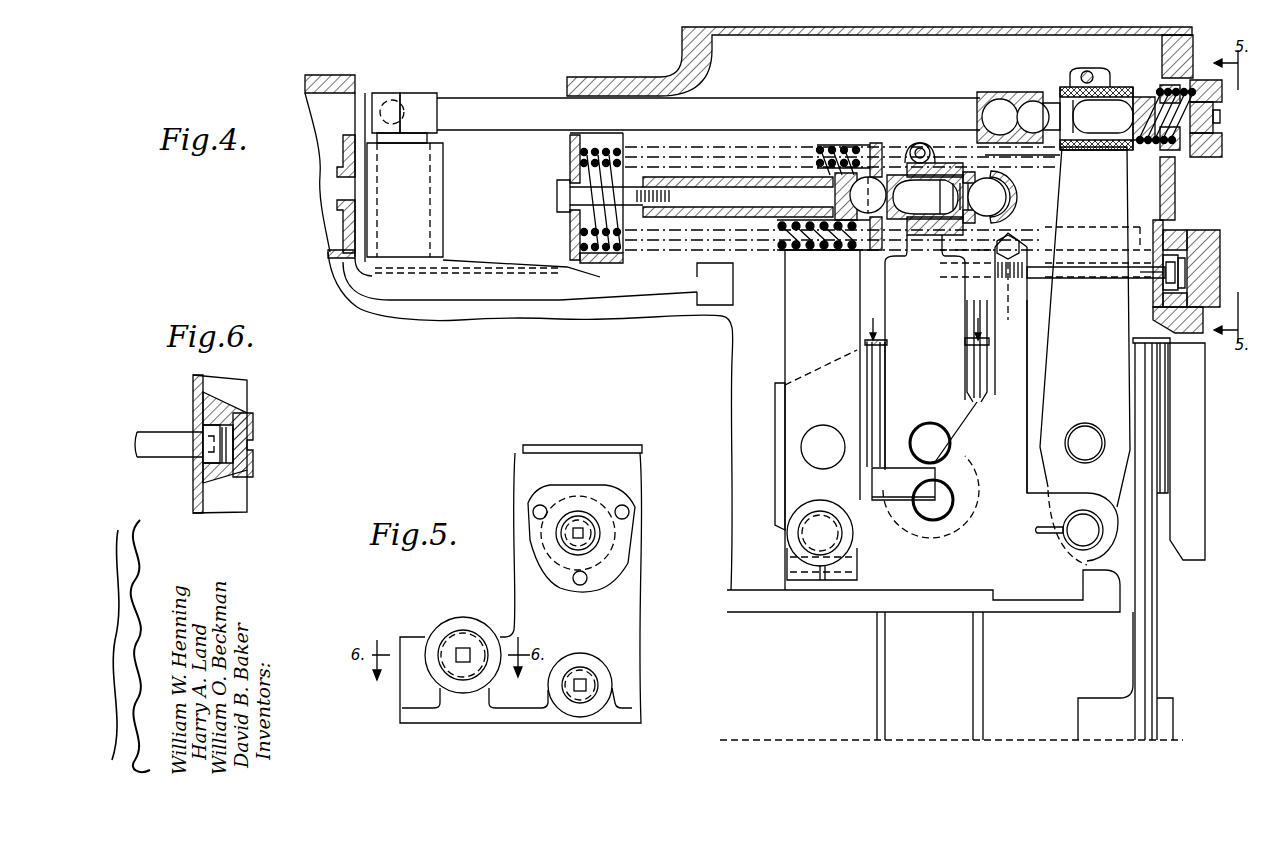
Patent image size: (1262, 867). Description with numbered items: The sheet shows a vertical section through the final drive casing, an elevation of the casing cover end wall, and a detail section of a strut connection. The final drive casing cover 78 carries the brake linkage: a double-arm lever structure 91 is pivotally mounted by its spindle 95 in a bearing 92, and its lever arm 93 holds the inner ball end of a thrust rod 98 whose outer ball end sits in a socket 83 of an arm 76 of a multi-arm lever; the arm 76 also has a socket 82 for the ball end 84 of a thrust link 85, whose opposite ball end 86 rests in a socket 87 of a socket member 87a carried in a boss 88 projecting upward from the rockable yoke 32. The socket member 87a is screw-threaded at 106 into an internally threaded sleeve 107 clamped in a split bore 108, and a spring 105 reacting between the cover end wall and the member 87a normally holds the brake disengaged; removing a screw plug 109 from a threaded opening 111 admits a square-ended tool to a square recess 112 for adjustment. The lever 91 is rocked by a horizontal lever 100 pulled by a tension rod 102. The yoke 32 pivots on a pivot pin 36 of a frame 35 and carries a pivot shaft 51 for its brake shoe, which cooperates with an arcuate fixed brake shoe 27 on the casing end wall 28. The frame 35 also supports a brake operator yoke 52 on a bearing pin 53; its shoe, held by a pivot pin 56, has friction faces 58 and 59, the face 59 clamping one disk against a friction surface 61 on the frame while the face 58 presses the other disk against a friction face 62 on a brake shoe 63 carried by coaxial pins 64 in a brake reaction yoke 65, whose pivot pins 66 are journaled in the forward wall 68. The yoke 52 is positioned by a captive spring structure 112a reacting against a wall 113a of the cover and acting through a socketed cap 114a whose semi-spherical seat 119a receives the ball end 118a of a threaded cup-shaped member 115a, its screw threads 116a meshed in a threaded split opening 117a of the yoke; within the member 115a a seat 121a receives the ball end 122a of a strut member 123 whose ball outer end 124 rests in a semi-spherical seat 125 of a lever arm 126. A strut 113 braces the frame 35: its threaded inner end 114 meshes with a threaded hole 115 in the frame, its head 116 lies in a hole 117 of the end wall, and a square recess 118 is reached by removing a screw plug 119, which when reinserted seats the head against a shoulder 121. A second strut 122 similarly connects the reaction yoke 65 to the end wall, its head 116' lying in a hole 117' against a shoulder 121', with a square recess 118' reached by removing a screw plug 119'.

In FIG. 4, the lever arm 93 is at (392, 100).
In FIG. 4, the double-arm lever structure 91 is at (422, 93).
In FIG. 4, the spindle 95 is at (430, 138).
In FIG. 4, the bearing 92 is at (445, 205).
In FIG. 4, the thrust rod 98 is at (749, 98).
In FIG. 4, the horizontal lever 100 is at (556, 297).
In FIG. 4, the tension rod 102 is at (697, 267).
In FIG. 4, the forward wall 68 is at (732, 333).
In FIG. 4, the wall of casing cover 113a is at (570, 162).
In FIG. 4, the ball end 118a is at (835, 195).
In FIG. 4, the captive spring structure 112a is at (812, 147).
In FIG. 4, the semi-spherical seat 119a is at (848, 147).
In FIG. 4, the socketed cap 114a is at (876, 143).
In FIG. 4, the semi-spherical seat 121a is at (862, 250).
In FIG. 4, the ball end 122a is at (895, 218).
In FIG. 4, the threaded cup-shaped member 115a is at (882, 180).
In FIG. 4, the strut member 123 is at (925, 197).
In FIG. 4, the threaded split opening 117a is at (922, 143).
In FIG. 4, the ball outer end 124 is at (945, 233).
In FIG. 4, the screw threads 116a is at (945, 162).
In FIG. 4, the semi-spherical seat 125 is at (1000, 180).
In FIG. 4, the lever arm 126 is at (1010, 210).
In FIG. 4, the ball end 84 is at (1022, 151).
In FIG. 4, the screw thread 106 is at (1070, 165).
In FIG. 4, the socket 83 is at (978, 92).
In FIG. 4, the lever arm 76 is at (1003, 95).
In FIG. 4, the socket 82 is at (1033, 100).
In FIG. 4, the boss 88 is at (1115, 87).
In FIG. 4, the thrust link 85 is at (1103, 116).
In FIG. 4, the internally threaded sleeve 107 is at (1080, 70).
In FIG. 4, the split bore 108 is at (1095, 87).
In FIG. 4, the square sectioned recess 112 is at (1143, 140).
In FIG. 4, the socket member 87a is at (1112, 158).
In FIG. 4, the socket 87 is at (1158, 88).
In FIG. 4, the ball end 86 is at (1062, 152).
In FIG. 4, the threaded opening 111 is at (1208, 80).
In FIG. 4, the screw plug 109 is at (1216, 113).
In FIG. 5, the screw plug 109 is at (575, 530).
In FIG. 4, the spring 105 is at (1185, 160).
In FIG. 4, the final drive casing cover 78 is at (1175, 183).
In FIG. 5, the final drive casing cover 78 is at (517, 590).
In FIG. 6, the final drive casing cover 78 is at (215, 378).
In FIG. 4, the square recess 118 is at (1193, 217).
In FIG. 4, the screw plug 119 is at (1231, 219).
In FIG. 5, the screw plug 119 is at (624, 677).
In FIG. 4, the hole 117 is at (1208, 246).
In FIG. 5, the hole 117 is at (580, 665).
In FIG. 4, the strut head 116 is at (1131, 259).
In FIG. 4, the strut 113 is at (1160, 280).
In FIG. 4, the shoulder 121 is at (1123, 314).
In FIG. 4, the threaded inner end 114 is at (1045, 280).
In FIG. 4, the second strut 122 is at (1115, 219).
In FIG. 6, the second strut 122 is at (143, 432).
In FIG. 4, the rockable yoke 32 is at (1077, 192).
In FIG. 4, the pivot shaft 51 is at (1082, 427).
In FIG. 4, the pivot pin 36 is at (1078, 540).
In FIG. 4, the threaded hole 115 is at (1008, 283).
In FIG. 4, the brake reaction yoke 65 is at (785, 352).
In FIG. 4, the friction face 62 is at (857, 341).
In FIG. 4, the brake shoe 63 is at (777, 500).
In FIG. 4, the coaxial pins 64 is at (822, 430).
In FIG. 4, the pivot pin 66 is at (810, 535).
In FIG. 4, the friction face 58 is at (885, 350).
In FIG. 4, the friction face 59 is at (967, 368).
In FIG. 4, the friction surface 61 is at (987, 368).
In FIG. 4, the brake operator yoke 52 is at (914, 305).
In FIG. 4, the pivot pin 56 is at (925, 428).
In FIG. 4, the bearing pin 53 is at (930, 515).
In FIG. 4, the frame 35 is at (979, 547).
In FIG. 4, the arcuate fixed brake shoe 27 is at (1160, 393).
In FIG. 4, the end wall 28 is at (1203, 430).
In FIG. 5, the hole 117' is at (440, 650).
In FIG. 6, the hole 117' is at (278, 476).
In FIG. 5, the screw plug 119' is at (414, 672).
In FIG. 6, the screw plug 119' is at (270, 445).
In FIG. 6, the square recess 118' is at (184, 427).
In FIG. 6, the strut head 116' is at (265, 436).
In FIG. 6, the shoulder 121' is at (163, 471).